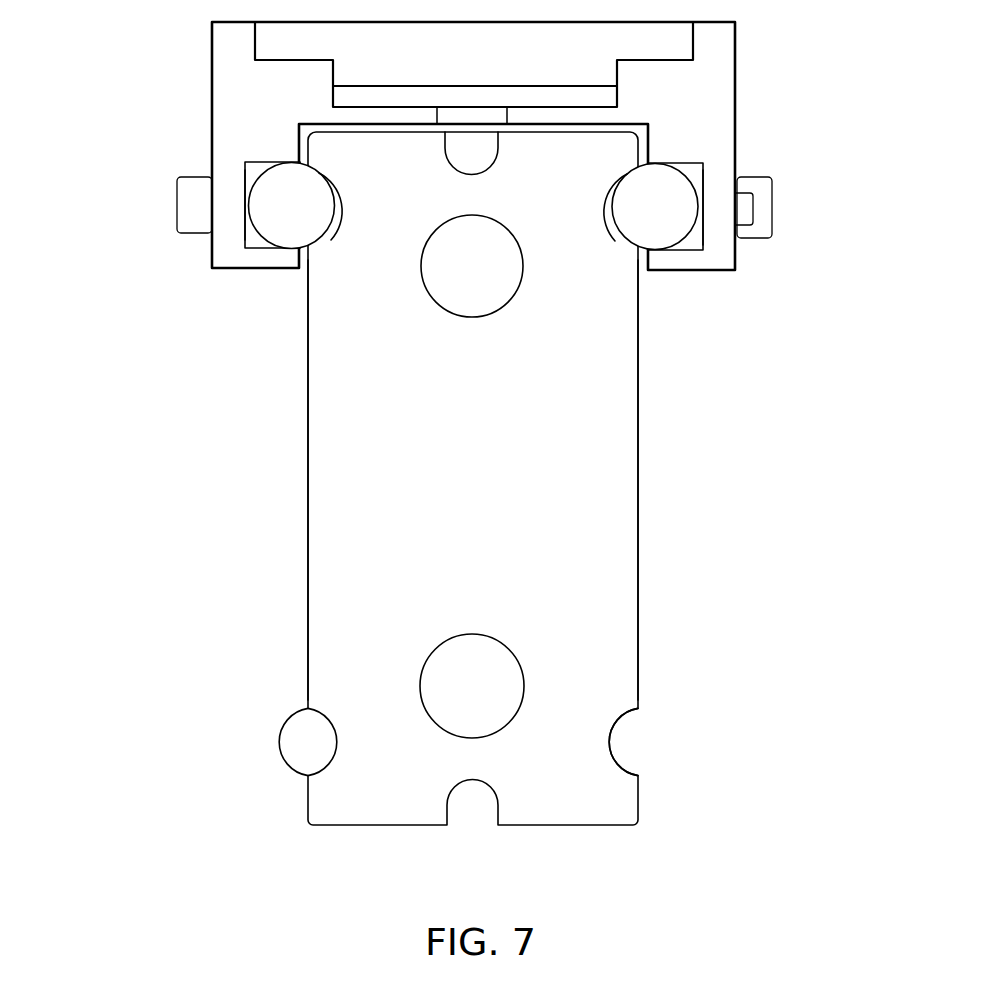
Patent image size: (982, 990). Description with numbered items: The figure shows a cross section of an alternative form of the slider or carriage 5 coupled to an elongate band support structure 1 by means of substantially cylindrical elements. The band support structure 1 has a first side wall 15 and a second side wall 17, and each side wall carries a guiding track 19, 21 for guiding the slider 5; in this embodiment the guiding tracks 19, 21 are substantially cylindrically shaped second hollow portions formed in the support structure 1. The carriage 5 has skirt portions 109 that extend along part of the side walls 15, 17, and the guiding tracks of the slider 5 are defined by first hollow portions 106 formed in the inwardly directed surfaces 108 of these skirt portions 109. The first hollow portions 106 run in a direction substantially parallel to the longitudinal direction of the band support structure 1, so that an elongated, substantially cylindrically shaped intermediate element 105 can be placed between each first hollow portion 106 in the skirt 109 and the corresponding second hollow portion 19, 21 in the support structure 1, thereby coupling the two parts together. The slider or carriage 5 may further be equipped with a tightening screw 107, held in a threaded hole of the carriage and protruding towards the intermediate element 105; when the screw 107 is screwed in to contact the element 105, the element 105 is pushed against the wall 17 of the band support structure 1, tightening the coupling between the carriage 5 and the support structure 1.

The elongate band support structure 1 is at (363, 620).
The slider 5 is at (212, 98).
The first side wall 15 is at (308, 425).
The second side wall 17 is at (638, 453).
The guiding track 19 is at (335, 205).
The guiding track 21 is at (613, 222).
The intermediate element 105 is at (280, 213).
The first hollow portion 106 is at (253, 180).
The tightening screw 107 is at (752, 217).
The inwardly directed surface 108 is at (247, 237).
The skirt portion 109 is at (227, 207).